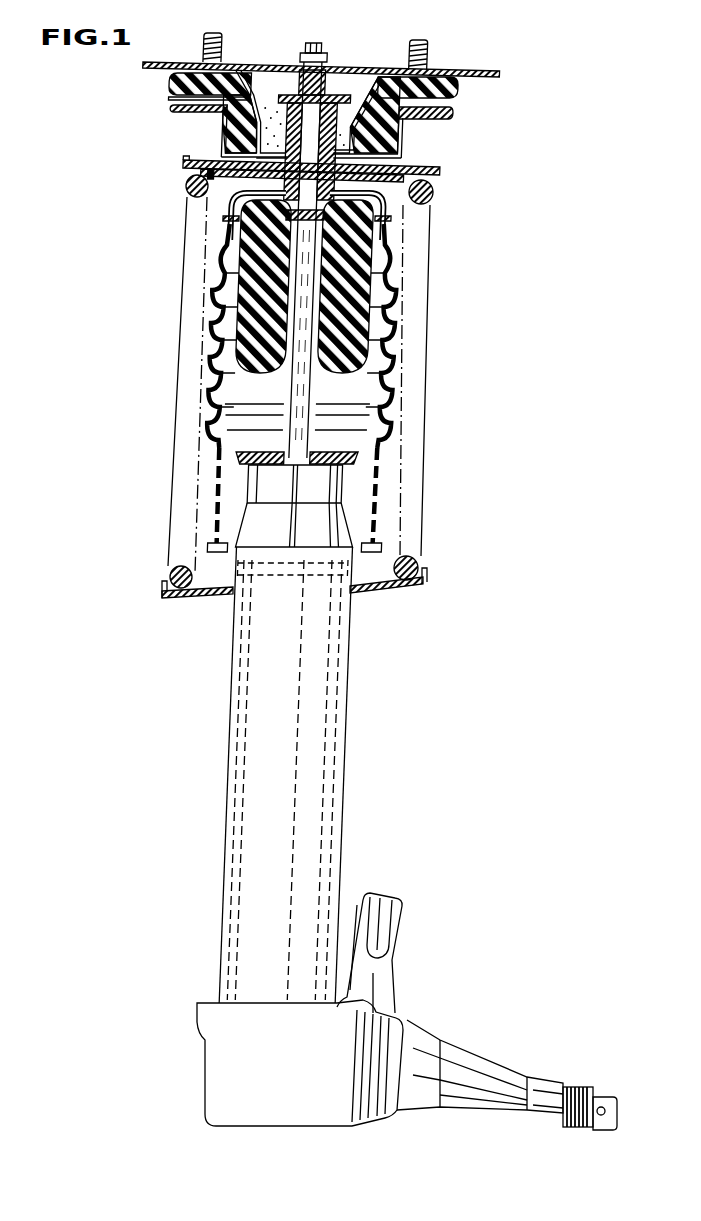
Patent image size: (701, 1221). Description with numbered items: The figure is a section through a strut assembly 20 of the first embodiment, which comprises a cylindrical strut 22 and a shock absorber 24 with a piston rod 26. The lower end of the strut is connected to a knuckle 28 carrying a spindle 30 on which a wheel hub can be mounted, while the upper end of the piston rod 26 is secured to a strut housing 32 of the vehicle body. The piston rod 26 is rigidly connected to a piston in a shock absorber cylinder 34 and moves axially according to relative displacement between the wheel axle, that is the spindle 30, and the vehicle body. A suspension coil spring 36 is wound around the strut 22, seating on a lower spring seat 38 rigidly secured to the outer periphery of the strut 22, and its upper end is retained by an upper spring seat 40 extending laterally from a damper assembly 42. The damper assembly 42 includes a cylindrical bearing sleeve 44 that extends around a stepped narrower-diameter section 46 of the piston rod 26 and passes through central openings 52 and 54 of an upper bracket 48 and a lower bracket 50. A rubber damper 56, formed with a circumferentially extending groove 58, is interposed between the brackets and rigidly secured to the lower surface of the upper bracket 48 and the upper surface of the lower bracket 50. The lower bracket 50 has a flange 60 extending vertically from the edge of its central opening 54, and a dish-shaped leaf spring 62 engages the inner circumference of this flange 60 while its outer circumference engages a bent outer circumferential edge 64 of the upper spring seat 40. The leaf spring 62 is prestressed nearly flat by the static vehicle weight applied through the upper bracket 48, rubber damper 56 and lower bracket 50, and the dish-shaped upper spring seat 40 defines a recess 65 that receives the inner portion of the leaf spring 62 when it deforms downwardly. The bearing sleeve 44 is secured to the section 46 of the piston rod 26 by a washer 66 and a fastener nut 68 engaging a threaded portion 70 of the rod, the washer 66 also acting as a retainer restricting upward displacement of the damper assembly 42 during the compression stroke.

The strut assembly 20 is at (350, 686).
The cylindrical strut 22 is at (229, 727).
The shock absorber 24 is at (232, 773).
The piston rod 26 is at (308, 411).
The knuckle 28 is at (280, 1118).
The spindle 30 is at (503, 1063).
The strut housing 32 is at (463, 72).
The shock absorber cylinder 34 is at (343, 800).
The suspension coil spring 36 is at (416, 476).
The lower spring seat 38 is at (412, 588).
The upper spring seat 40 is at (432, 176).
The damper assembly 42 is at (431, 138).
The cylindrical bearing sleeve 44 is at (360, 118).
The stepped narrower-diameter section 46 is at (375, 187).
The upper bracket 48 is at (170, 78).
The lower bracket 50 is at (167, 114).
The central opening 52 is at (385, 152).
The central opening 54 is at (365, 125).
The rubber damper 56 is at (237, 68).
The circumferentially extending groove 58 is at (210, 98).
The flange 60 is at (303, 125).
The dish-shaped leaf spring 62 is at (211, 163).
The bent outer circumferential edge 64 is at (188, 167).
The recess 65 is at (199, 199).
The washer 66 is at (288, 92).
The fastener nut 68 is at (319, 82).
The threaded portion 70 is at (313, 44).